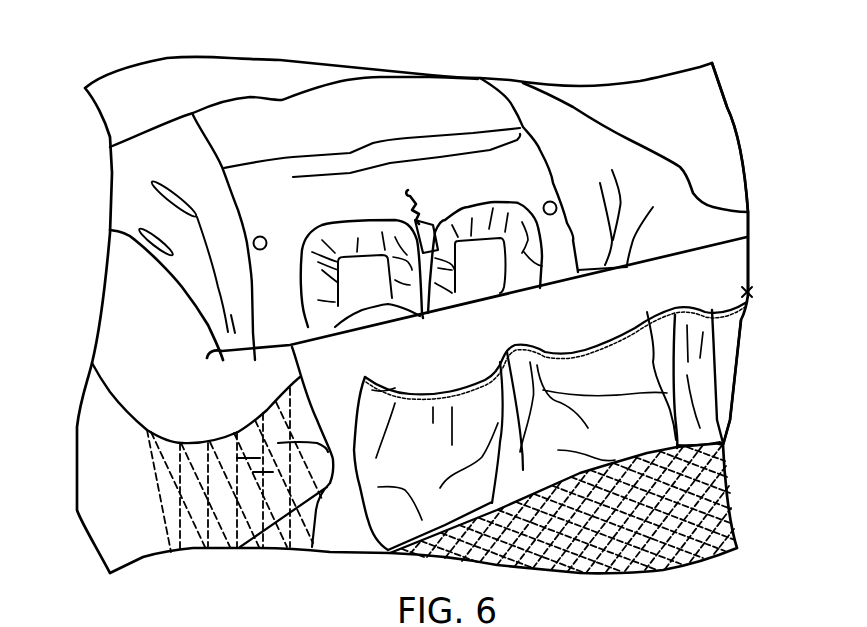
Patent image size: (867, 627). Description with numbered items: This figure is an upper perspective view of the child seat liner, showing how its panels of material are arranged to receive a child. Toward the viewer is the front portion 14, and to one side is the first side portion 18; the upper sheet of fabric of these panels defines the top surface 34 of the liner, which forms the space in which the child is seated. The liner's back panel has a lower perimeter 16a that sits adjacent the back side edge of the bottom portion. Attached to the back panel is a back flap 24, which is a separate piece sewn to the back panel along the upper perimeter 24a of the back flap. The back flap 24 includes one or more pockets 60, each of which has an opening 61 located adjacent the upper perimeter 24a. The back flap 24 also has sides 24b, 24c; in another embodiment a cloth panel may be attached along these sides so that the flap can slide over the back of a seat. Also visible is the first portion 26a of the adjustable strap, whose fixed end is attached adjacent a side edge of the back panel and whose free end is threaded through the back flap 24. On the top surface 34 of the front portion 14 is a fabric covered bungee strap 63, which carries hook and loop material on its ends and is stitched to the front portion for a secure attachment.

The front portion 14 is at (527, 152).
The top surface 34 is at (635, 150).
The first side portion 18 is at (687, 200).
The second fabric covered bungee strap 63 is at (423, 198).
The lower perimeter of the back panel 16a is at (740, 250).
The upper perimeter of the back flap 24a is at (733, 258).
The back flap 24 is at (750, 294).
The opening 61 is at (437, 386).
The pocket 60 is at (718, 446).
The side of the back flap 24c is at (730, 387).
The side of the back flap 24b is at (293, 540).
The first portion of the adjustable strap 26a is at (247, 540).